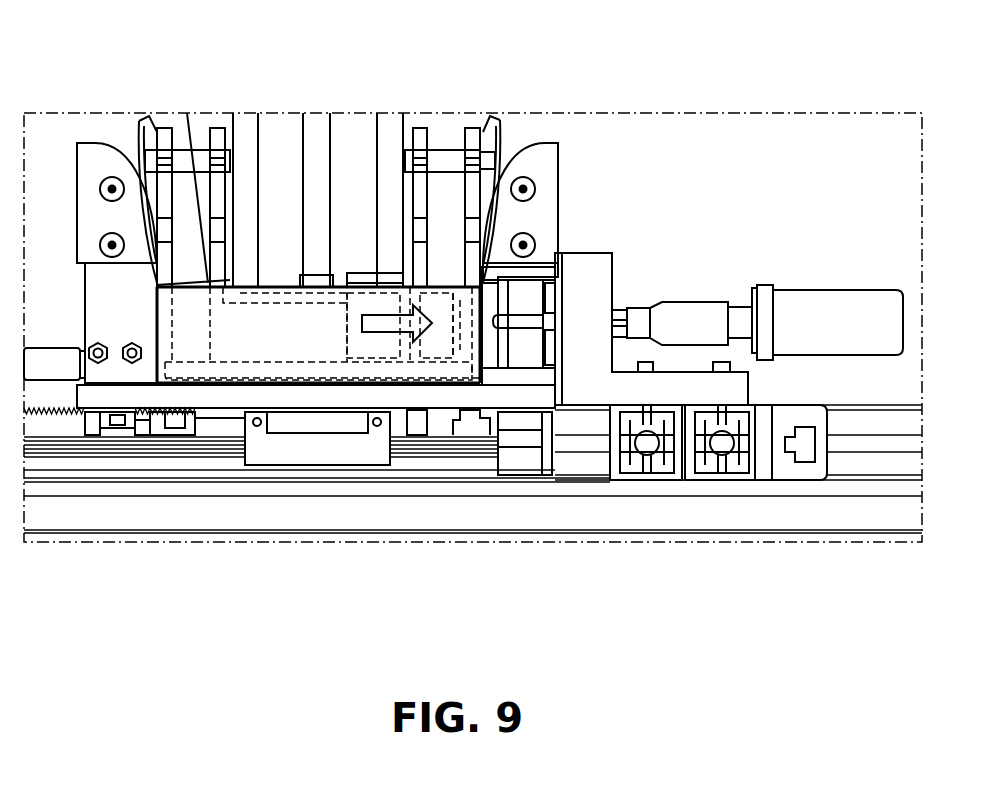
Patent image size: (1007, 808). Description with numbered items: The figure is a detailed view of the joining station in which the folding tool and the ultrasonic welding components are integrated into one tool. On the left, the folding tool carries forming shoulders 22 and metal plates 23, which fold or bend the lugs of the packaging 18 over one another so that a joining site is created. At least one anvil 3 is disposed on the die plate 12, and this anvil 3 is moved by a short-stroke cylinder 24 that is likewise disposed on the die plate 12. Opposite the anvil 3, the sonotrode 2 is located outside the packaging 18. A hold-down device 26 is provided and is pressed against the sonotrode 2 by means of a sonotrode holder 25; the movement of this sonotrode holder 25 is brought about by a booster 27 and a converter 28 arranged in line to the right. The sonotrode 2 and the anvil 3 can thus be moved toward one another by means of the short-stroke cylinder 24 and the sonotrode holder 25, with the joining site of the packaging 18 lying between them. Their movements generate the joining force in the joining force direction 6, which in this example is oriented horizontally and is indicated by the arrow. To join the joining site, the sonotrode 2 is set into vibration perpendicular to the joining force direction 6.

The sonotrode 2 is at (520, 358).
The anvil 3 is at (460, 347).
The joining force direction 6 is at (373, 322).
The die plate 12 is at (283, 372).
The packaging 18 is at (278, 275).
The forming shoulders 22 is at (93, 153).
The metal plates 23 is at (152, 118).
The short-stroke cylinder 24 is at (357, 353).
The sonotrode holder 25 is at (597, 260).
The hold-down device 26 is at (560, 270).
The booster 27 is at (697, 312).
The converter 28 is at (832, 300).